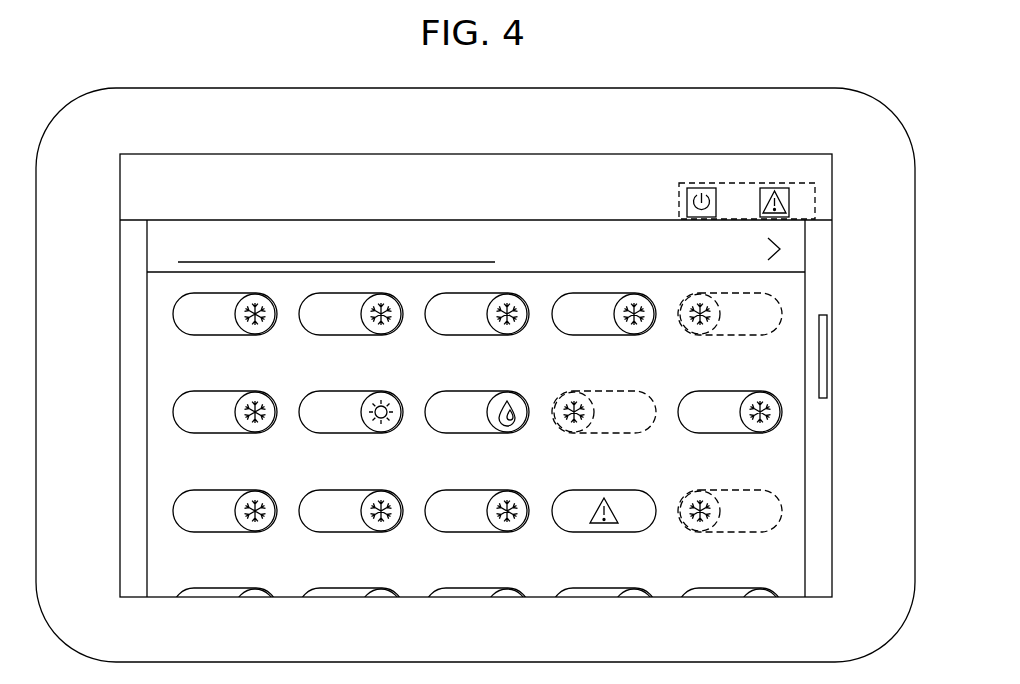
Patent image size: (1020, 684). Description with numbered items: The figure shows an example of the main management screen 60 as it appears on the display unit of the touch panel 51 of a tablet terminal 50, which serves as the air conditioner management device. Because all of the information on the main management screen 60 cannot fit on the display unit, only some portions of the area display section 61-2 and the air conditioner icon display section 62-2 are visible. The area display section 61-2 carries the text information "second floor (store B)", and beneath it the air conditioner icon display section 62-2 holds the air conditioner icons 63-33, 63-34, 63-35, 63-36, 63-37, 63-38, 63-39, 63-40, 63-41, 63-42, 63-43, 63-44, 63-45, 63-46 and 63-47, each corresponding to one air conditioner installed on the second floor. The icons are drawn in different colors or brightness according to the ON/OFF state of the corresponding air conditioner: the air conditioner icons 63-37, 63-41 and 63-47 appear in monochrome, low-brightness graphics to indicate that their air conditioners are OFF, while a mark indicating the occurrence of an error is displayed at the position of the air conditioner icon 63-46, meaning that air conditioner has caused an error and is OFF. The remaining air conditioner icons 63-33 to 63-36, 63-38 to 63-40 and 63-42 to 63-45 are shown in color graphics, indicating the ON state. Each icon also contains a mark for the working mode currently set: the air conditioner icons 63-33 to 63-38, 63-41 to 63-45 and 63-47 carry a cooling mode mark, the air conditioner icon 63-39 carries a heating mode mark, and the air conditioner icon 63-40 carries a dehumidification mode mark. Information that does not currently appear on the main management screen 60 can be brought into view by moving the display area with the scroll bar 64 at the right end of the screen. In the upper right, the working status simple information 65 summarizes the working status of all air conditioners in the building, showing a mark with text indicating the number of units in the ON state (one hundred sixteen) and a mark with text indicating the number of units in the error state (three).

The tablet terminal 50 is at (663, 88).
The touch panel 51 is at (462, 153).
The main management screen 60 is at (427, 220).
The area display section 61-2 is at (177, 252).
The air conditioner icon display section 62-2 is at (414, 461).
The air conditioner icon 63-33 is at (222, 335).
The air conditioner icon 63-34 is at (348, 335).
The air conditioner icon 63-35 is at (474, 335).
The air conditioner icon 63-36 is at (601, 335).
The air conditioner icon 63-37 is at (727, 335).
The air conditioner icon 63-38 is at (222, 433).
The air conditioner icon 63-39 is at (348, 433).
The air conditioner icon 63-40 is at (474, 433).
The air conditioner icon 63-41 is at (601, 433).
The air conditioner icon 63-42 is at (727, 433).
The air conditioner icon 63-43 is at (222, 532).
The air conditioner icon 63-44 is at (348, 532).
The air conditioner icon 63-45 is at (474, 532).
The air conditioner icon 63-46 is at (601, 532).
The air conditioner icon 63-47 is at (727, 532).
The scroll bar 64 is at (827, 343).
The working status simple information 65 is at (815, 201).